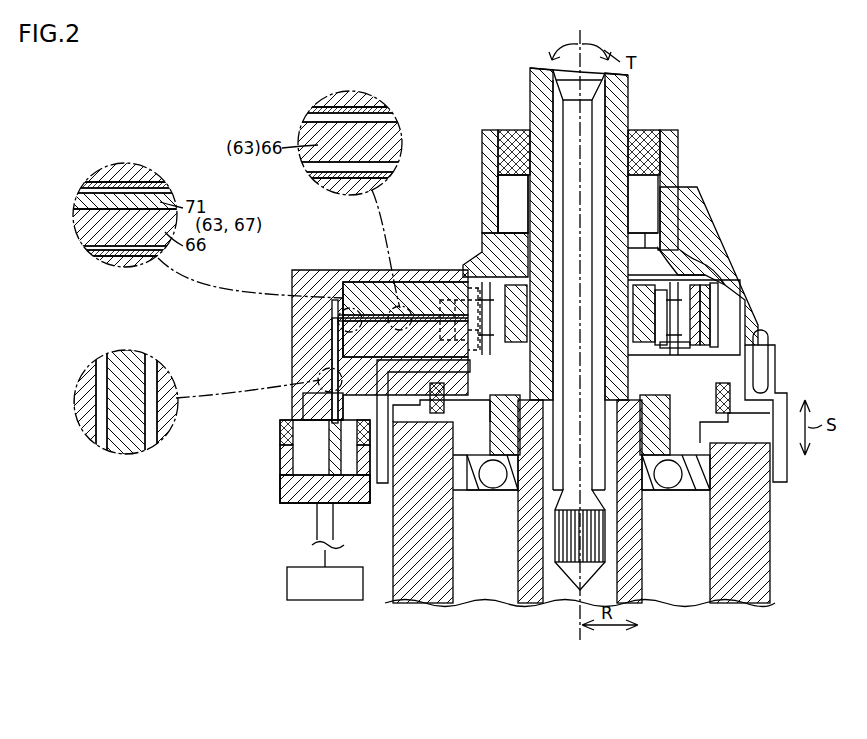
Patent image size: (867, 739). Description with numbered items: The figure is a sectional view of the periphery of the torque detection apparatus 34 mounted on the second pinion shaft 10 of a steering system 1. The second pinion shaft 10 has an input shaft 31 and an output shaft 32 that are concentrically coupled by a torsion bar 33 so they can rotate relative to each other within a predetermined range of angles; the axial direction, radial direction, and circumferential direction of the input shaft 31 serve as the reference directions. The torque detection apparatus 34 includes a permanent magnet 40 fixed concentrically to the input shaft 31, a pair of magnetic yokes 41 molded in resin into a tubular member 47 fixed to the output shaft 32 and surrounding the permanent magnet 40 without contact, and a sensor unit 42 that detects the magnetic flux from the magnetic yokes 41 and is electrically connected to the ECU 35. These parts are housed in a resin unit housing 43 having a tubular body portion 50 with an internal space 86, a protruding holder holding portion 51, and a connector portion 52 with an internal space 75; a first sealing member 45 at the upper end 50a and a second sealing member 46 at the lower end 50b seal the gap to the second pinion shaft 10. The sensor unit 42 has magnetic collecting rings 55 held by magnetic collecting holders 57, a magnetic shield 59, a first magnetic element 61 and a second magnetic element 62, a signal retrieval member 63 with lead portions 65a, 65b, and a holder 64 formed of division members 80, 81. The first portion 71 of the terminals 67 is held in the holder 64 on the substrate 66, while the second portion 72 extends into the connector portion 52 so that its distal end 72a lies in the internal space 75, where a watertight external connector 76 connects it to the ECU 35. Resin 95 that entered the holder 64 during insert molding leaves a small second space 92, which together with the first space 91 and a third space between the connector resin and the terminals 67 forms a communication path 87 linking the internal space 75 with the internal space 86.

The machine tool 1 is at (551, 631).
The second pinion shaft 10 is at (640, 80).
The input shaft 31 is at (530, 94).
The output shaft 32 is at (640, 568).
The torsion bar 33 is at (553, 500).
The torque detection apparatus 34 is at (742, 222).
The ECU 35 is at (287, 583).
The permanent magnet 40 is at (690, 268).
The magnetic yokes 41 is at (680, 290).
The sensor unit 42 is at (304, 260).
The unit housing 43 is at (471, 140).
The first sealing member 45 is at (645, 132).
The second sealing member 46 is at (735, 398).
The tubular member 47 is at (660, 398).
The body portion 50 is at (482, 158).
The upper end 50a is at (680, 135).
The lower end 50b is at (787, 470).
The holder holding portion 51 is at (342, 285).
The connector portion 52 is at (326, 382).
The magnetic collecting rings 55 is at (700, 296).
The magnetic collecting holders 57 is at (712, 310).
The magnetic shield 59 is at (690, 346).
The first magnetic element 61 is at (478, 320).
The second magnetic element 62 is at (480, 322).
The signal retrieval member 63 is at (360, 314).
The holder 64 is at (335, 300).
The lead wire 65a is at (470, 300).
The lead wire 65b is at (478, 300).
The substrate 66 is at (395, 340).
The terminals 67 is at (353, 358).
The first portion 71 is at (372, 316).
The second portion 72 is at (328, 418).
The distal end 72a is at (342, 488).
The internal space 75 is at (300, 447).
The external connector 76 is at (282, 492).
The division member 80 is at (110, 264).
The division member 81 is at (144, 175).
The internal space 86 is at (512, 195).
The communication path 87 is at (335, 318).
The first space 91 is at (472, 380).
The second space 92 is at (412, 358).
The resin 95 is at (160, 185).